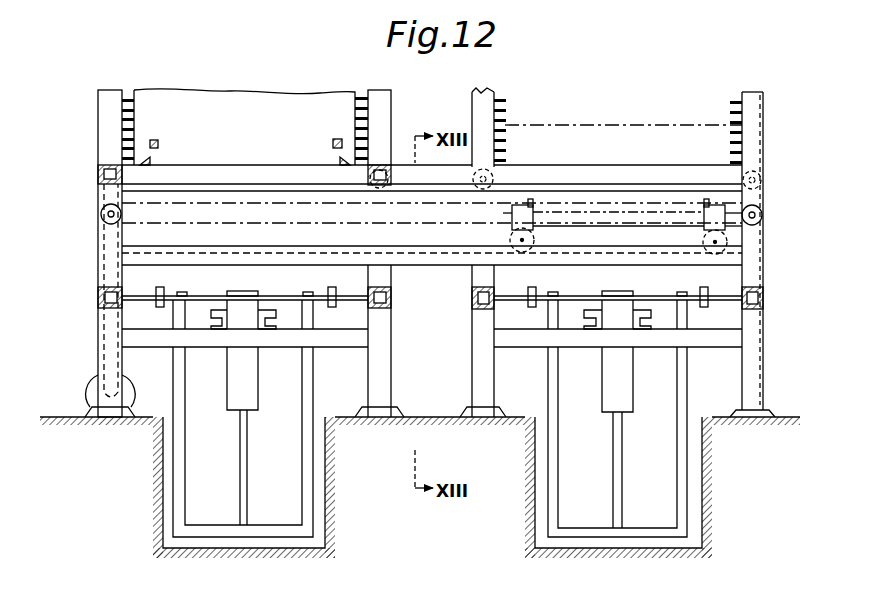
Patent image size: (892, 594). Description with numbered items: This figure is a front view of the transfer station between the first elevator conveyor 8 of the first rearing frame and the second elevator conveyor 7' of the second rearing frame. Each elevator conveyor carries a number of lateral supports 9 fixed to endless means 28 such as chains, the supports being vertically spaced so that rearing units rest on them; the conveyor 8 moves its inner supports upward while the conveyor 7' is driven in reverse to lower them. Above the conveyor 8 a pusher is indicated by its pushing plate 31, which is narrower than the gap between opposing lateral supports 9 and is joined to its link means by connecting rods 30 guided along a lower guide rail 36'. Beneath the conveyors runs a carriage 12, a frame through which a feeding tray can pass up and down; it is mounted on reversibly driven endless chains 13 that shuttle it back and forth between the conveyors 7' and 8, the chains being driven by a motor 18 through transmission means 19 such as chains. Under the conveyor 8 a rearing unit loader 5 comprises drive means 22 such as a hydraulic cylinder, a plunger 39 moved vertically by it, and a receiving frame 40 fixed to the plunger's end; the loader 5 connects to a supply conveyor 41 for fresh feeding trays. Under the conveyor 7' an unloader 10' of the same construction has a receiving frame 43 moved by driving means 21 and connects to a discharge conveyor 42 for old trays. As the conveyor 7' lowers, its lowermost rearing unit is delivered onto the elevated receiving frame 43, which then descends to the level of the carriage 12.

The rearing unit loader 5 is at (176, 454).
The second elevator conveyor 7' is at (505, 243).
The first elevator conveyor 8 is at (118, 118).
The lateral supports 9 is at (127, 98).
The rearing unit unloader 10' is at (656, 442).
The carriage 12 is at (721, 220).
The endless chains 13 is at (407, 226).
The motor 18 is at (92, 390).
The transmission means 19 is at (98, 258).
The driving means 21 is at (632, 383).
The drive means 22 is at (256, 383).
The endless means 28 is at (118, 152).
The connecting rods 30 is at (154, 140).
The pushing plate 31 is at (205, 97).
The lower guide rail 36' is at (245, 141).
The plunger 39 is at (248, 452).
The receiving frame 40 is at (178, 503).
The supply conveyor 41 is at (133, 298).
The discharge conveyor 42 is at (508, 301).
The receiving frame 43 is at (683, 518).